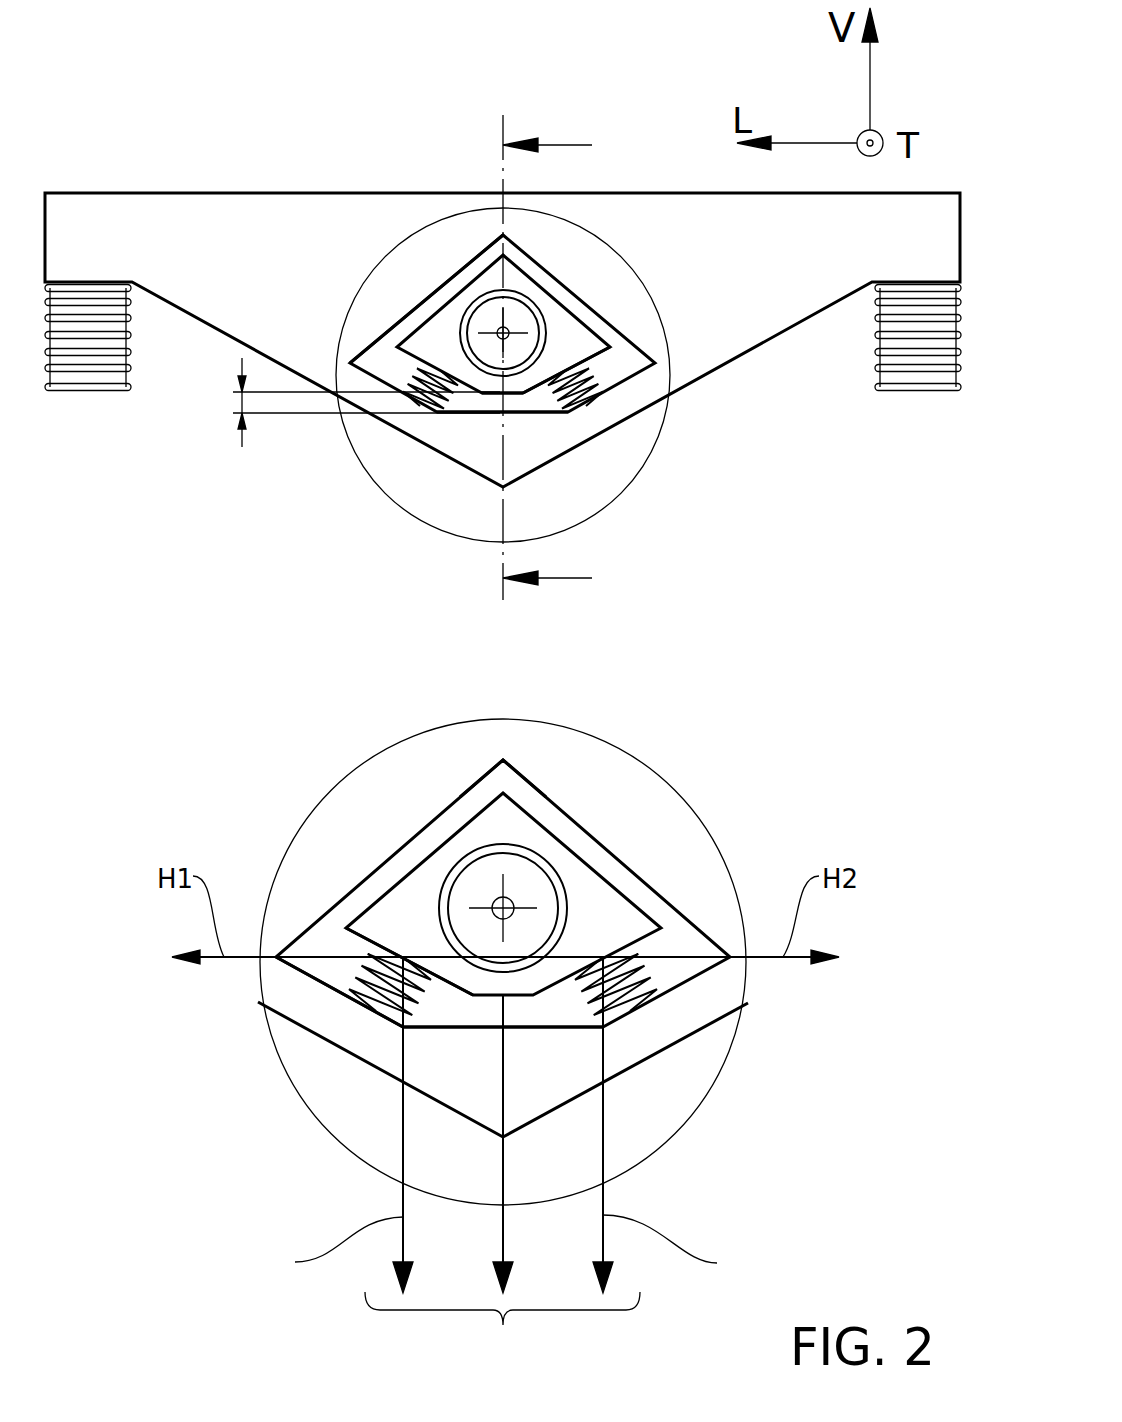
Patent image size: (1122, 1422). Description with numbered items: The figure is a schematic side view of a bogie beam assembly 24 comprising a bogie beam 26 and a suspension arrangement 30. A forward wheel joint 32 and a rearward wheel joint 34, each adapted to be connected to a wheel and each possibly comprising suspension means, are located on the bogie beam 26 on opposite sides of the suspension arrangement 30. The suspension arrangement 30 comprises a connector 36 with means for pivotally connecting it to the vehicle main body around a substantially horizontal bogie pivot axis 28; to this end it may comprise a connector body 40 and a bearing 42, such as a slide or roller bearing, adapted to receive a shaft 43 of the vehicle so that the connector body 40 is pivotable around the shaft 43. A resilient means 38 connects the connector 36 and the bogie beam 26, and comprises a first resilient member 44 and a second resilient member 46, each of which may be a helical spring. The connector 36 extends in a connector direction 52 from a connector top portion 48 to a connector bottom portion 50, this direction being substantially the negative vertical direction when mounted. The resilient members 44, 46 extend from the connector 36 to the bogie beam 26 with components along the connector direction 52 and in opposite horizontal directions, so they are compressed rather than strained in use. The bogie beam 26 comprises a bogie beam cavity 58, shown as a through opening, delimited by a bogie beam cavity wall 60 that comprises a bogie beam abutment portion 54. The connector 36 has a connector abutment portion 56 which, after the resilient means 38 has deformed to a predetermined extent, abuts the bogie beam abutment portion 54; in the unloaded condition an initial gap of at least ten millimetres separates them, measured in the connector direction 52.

The bogie beam assembly 24 is at (280, 82).
The bogie beam 26 is at (83, 223).
The bogie pivot axis 28 is at (510, 342).
The suspension arrangement 30 is at (629, 328).
The forward wheel joint 32 is at (82, 363).
The rearward wheel joint 34 is at (924, 363).
The connector 36 is at (564, 843).
The resilient means 38 is at (492, 1160).
The connector body 40 is at (373, 924).
The bearing 42 is at (450, 893).
The shaft 43 is at (470, 305).
The first resilient member 44 is at (340, 1008).
The second resilient member 46 is at (660, 1008).
The connector top portion 48 is at (503, 792).
The connector bottom portion 50 is at (488, 1003).
The connector direction 52 is at (503, 1170).
The bogie beam abutment portion 54 is at (488, 414).
The connector abutment portion 56 is at (481, 395).
The bogie beam cavity 58 is at (608, 357).
The bogie beam cavity wall 60 is at (372, 342).